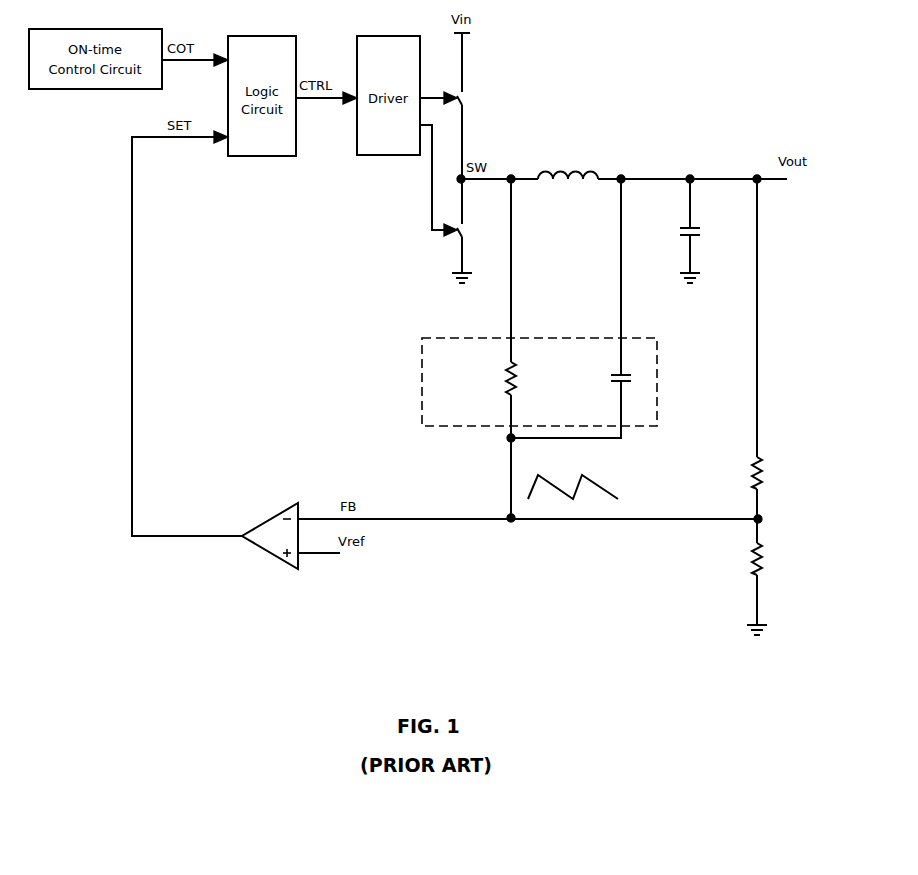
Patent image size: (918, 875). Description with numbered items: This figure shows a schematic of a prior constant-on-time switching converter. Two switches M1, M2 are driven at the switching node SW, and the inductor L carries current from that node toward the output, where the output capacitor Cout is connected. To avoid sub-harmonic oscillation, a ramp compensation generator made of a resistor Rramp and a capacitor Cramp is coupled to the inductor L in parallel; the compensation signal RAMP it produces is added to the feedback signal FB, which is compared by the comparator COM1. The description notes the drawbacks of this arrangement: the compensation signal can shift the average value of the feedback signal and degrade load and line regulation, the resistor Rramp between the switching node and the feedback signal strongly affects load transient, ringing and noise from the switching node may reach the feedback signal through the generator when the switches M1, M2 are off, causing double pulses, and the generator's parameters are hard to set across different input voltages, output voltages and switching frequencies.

The switch M1 is at (472, 106).
The switch M2 is at (471, 231).
The inductor L is at (568, 165).
The output capacitor Cout is at (668, 231).
The resistor Rramp is at (476, 378).
The capacitor Cramp is at (571, 308).
The comparator COM1 is at (265, 541).